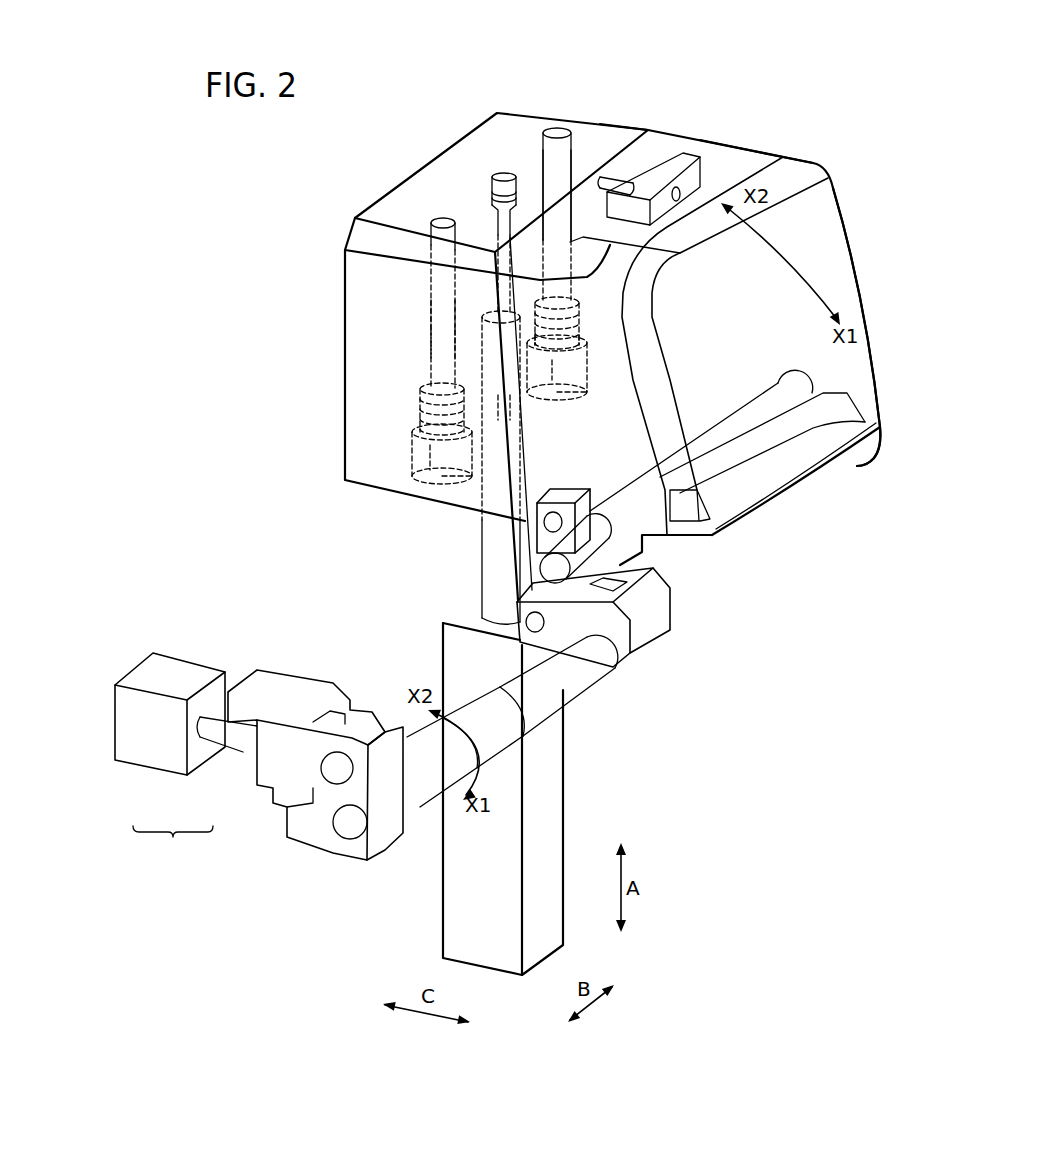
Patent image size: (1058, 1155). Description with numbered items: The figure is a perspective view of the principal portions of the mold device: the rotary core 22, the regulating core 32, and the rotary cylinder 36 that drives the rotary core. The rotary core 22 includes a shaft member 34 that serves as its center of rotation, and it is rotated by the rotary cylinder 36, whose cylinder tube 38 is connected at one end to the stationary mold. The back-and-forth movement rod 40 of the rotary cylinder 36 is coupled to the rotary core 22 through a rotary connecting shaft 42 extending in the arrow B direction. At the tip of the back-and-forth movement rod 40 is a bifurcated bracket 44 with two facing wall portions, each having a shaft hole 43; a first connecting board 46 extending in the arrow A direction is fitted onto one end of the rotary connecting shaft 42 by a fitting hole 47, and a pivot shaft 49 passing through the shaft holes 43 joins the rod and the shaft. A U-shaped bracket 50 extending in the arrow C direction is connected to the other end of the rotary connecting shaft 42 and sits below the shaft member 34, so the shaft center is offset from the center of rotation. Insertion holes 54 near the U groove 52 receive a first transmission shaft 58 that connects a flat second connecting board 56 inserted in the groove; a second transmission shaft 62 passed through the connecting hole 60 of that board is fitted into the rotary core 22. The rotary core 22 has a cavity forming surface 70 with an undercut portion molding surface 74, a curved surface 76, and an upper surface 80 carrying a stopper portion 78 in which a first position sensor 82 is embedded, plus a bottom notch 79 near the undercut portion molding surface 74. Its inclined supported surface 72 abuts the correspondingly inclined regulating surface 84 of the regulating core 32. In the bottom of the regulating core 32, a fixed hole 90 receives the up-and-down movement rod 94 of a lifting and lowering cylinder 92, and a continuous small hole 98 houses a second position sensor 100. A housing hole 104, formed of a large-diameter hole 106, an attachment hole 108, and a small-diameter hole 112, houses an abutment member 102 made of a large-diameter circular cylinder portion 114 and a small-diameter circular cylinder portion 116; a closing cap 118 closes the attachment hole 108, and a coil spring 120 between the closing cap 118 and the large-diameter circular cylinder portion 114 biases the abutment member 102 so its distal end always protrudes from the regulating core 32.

The rotary core 22 is at (679, 120).
The regulating core 32 is at (360, 189).
The shaft member 34 is at (782, 385).
The rotary cylinder 36 is at (173, 843).
The cylinder tube 38 is at (153, 758).
The back-and-forth movement rod 40 is at (213, 727).
The rotary connecting shaft 42 is at (605, 648).
The shaft hole 43 is at (373, 700).
The bifurcated bracket 44 is at (300, 707).
The first connecting board 46 is at (393, 827).
The fitting hole 47 is at (347, 840).
The pivot shaft 49 is at (330, 763).
The U-shaped bracket 50 is at (670, 620).
The U groove 52 is at (618, 587).
The insertion hole 54 is at (603, 645).
The second connecting board 56 is at (573, 497).
The first transmission shaft 58 is at (540, 630).
The connecting hole 60 is at (553, 522).
The second transmission shaft 62 is at (530, 540).
The cavity forming surface 70 is at (849, 270).
The supported surface 72 is at (615, 152).
The undercut portion molding surface 74 is at (878, 448).
The curved surface 76 is at (825, 233).
The stopper portion 78 is at (687, 167).
The bottom notch 79 is at (772, 448).
The upper surface 80 is at (720, 153).
The first position sensor 82 is at (643, 177).
The regulating surface 84 is at (524, 523).
The fixed hole 90 is at (518, 408).
The lifting and lowering cylinder 92 is at (572, 797).
The up-and-down movement rod 94 is at (492, 603).
The small hole 98 is at (497, 295).
The second position sensor 100 is at (503, 170).
The abutment member 102 is at (558, 130).
The housing hole 104 is at (560, 157).
The large-diameter hole 106 is at (450, 467).
The attachment hole 108 is at (433, 443).
The small-diameter hole 112 is at (453, 328).
The large-diameter circular cylinder portion 114 is at (430, 400).
The small-diameter circular cylinder portion 116 is at (437, 337).
The closing cap 118 is at (567, 363).
The coil spring 120 is at (430, 447).